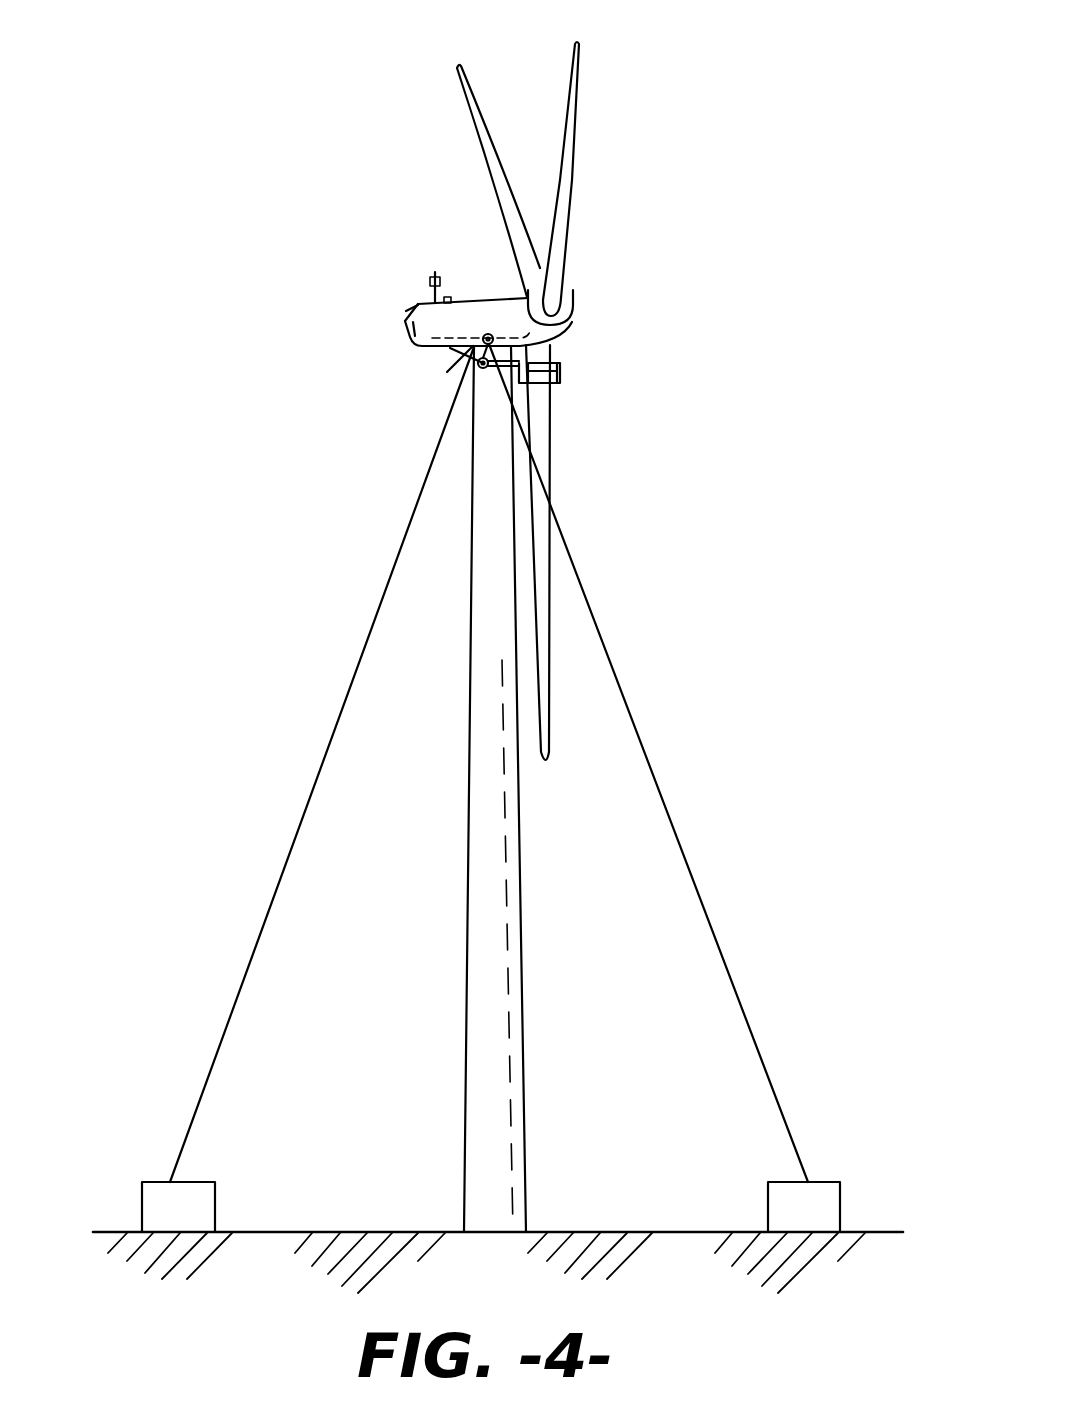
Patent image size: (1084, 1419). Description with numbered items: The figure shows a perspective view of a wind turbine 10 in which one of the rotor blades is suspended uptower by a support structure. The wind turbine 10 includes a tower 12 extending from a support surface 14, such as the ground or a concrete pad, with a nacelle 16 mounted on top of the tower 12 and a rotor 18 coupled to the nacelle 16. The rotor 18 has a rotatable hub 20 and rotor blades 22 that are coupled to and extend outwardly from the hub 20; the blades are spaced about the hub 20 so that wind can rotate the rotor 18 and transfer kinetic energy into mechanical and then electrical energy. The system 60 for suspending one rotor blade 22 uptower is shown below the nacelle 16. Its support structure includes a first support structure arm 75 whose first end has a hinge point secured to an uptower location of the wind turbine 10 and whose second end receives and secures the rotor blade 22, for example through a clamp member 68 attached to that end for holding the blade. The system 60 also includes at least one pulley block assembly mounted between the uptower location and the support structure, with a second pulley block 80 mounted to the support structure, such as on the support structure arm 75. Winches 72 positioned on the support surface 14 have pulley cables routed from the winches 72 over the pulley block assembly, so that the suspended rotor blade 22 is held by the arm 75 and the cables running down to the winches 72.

The wind turbine 10 is at (722, 83).
The tower 12 is at (479, 908).
The support surface 14 is at (607, 1231).
The nacelle 16 is at (422, 303).
The rotor 18 is at (583, 291).
The rotatable hub 20 is at (573, 320).
The rotor blade 22 is at (568, 88).
The system for suspending a rotor blade uptower 60 is at (498, 397).
The clamp member 68 is at (558, 382).
The winch 72 is at (216, 1193).
The first support structure arm 75 is at (447, 372).
The second pulley block 80 is at (477, 368).